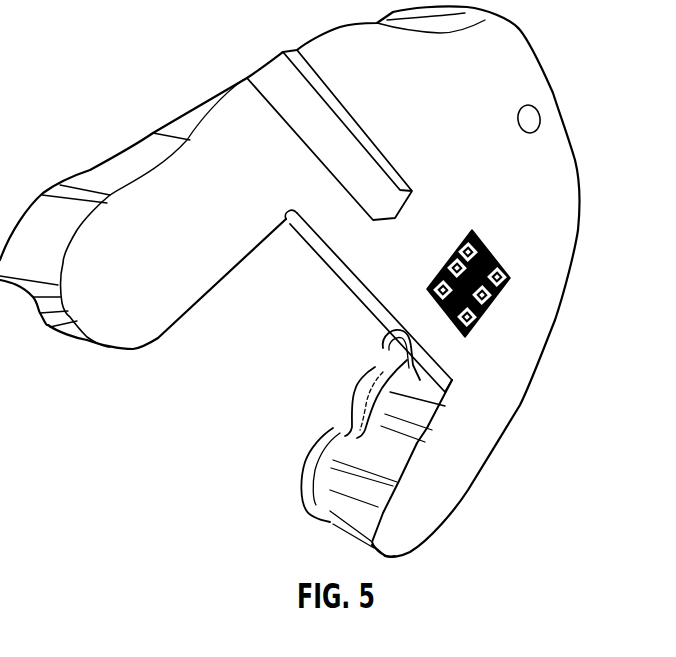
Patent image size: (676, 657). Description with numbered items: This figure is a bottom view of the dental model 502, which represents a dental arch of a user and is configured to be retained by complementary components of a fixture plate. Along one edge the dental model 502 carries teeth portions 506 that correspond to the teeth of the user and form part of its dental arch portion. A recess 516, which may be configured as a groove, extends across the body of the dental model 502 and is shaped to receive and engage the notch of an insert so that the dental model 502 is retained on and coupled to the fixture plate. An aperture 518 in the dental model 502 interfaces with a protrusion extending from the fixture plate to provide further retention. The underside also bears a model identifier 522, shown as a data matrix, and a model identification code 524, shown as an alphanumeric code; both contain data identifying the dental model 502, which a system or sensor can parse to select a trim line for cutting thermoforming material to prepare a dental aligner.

The dental model 502 is at (135, 335).
The teeth portions 506 is at (362, 412).
The recess 516 is at (273, 78).
The aperture 518 is at (538, 108).
The model identifier 522 is at (508, 282).
The model identification code 524 is at (553, 231).